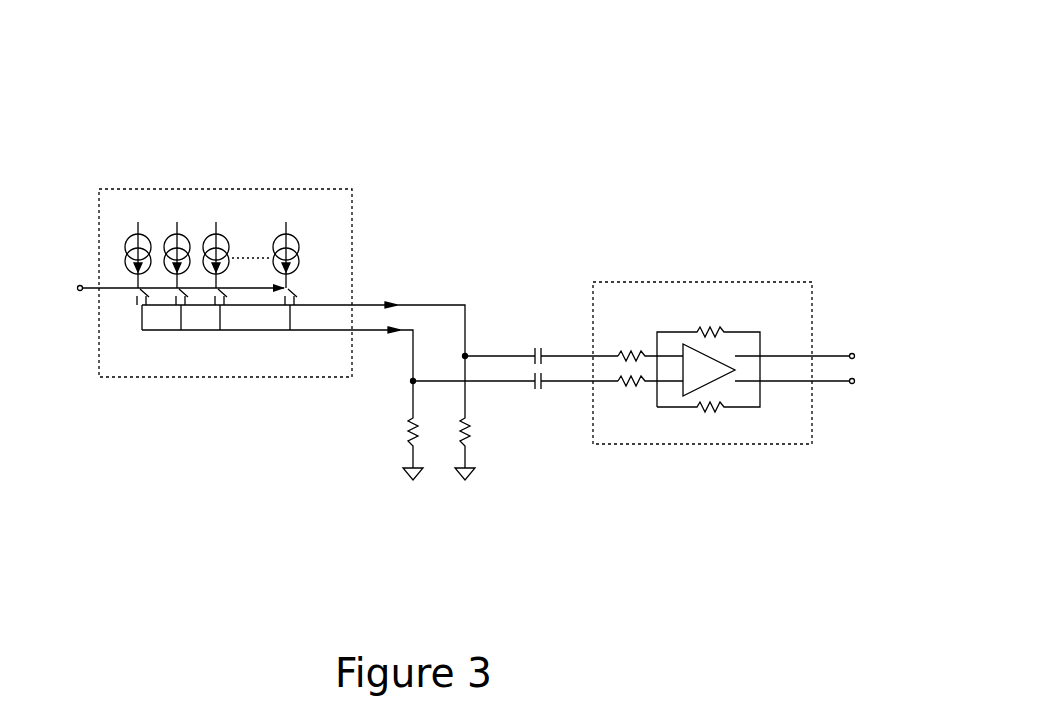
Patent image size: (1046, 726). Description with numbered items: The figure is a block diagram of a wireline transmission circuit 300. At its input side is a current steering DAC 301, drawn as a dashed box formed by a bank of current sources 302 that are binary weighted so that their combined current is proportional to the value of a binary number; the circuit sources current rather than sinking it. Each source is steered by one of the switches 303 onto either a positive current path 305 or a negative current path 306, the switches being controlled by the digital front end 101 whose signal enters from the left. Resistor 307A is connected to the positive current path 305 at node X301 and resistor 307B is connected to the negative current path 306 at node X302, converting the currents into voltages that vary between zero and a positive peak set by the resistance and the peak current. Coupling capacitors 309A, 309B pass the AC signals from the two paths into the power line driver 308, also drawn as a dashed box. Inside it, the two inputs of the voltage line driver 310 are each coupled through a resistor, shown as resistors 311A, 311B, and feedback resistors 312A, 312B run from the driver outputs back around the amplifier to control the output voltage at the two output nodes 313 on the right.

The wireline transmission circuit 300 is at (700, 110).
The digital front end 101 is at (154, 279).
The current steering DAC 301 is at (280, 188).
The current sources 302 is at (303, 253).
The switches 303 is at (307, 290).
The positive current path 305 is at (405, 302).
The negative current path 306 is at (398, 337).
The node X301 is at (468, 353).
The node X302 is at (411, 383).
The resistor 307A is at (475, 435).
The resistor 307B is at (405, 437).
The coupling capacitor 309A is at (542, 343).
The coupling capacitor 309B is at (542, 398).
The power line driver 308 is at (656, 281).
The input resistor 311A is at (626, 351).
The input resistor 311B is at (635, 388).
The feedback resistor 312A is at (722, 327).
The feedback resistor 312B is at (710, 412).
The voltage line driver 310 is at (727, 373).
The output nodes 313 is at (857, 360).